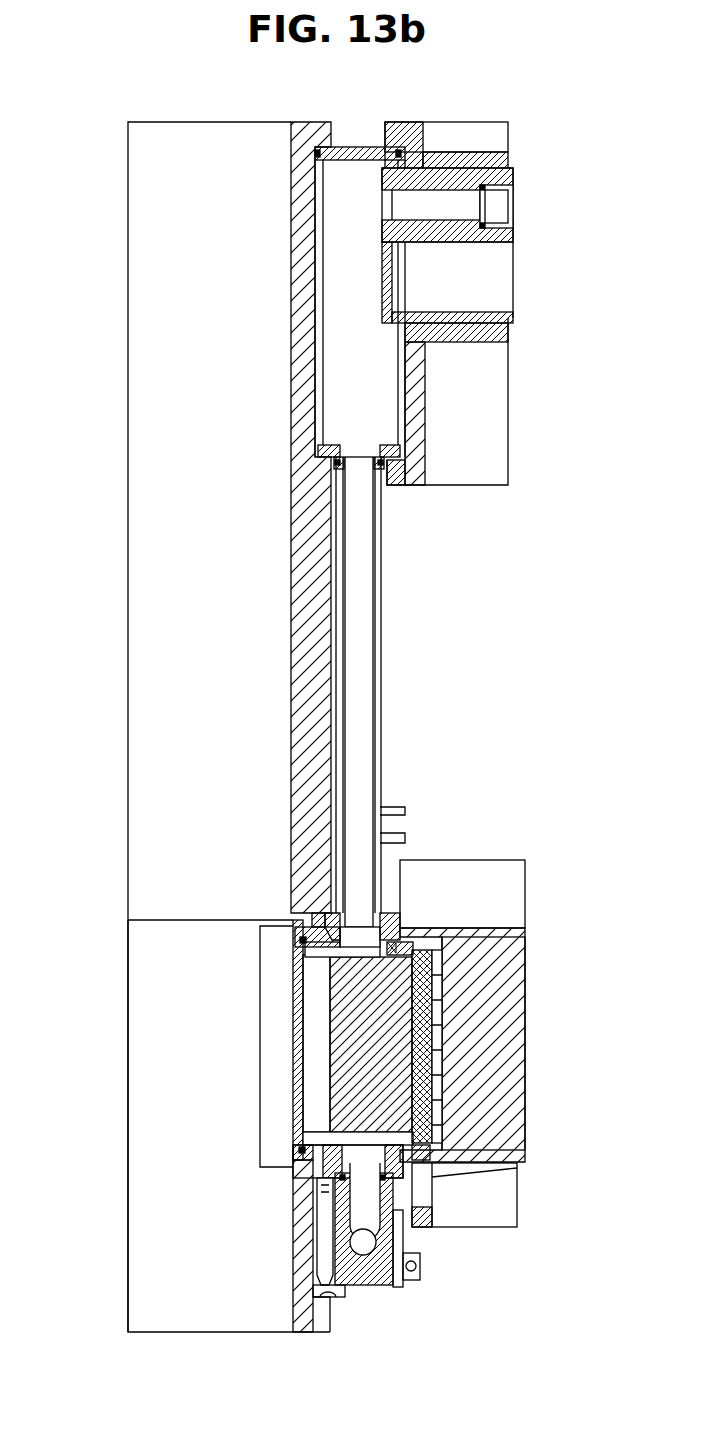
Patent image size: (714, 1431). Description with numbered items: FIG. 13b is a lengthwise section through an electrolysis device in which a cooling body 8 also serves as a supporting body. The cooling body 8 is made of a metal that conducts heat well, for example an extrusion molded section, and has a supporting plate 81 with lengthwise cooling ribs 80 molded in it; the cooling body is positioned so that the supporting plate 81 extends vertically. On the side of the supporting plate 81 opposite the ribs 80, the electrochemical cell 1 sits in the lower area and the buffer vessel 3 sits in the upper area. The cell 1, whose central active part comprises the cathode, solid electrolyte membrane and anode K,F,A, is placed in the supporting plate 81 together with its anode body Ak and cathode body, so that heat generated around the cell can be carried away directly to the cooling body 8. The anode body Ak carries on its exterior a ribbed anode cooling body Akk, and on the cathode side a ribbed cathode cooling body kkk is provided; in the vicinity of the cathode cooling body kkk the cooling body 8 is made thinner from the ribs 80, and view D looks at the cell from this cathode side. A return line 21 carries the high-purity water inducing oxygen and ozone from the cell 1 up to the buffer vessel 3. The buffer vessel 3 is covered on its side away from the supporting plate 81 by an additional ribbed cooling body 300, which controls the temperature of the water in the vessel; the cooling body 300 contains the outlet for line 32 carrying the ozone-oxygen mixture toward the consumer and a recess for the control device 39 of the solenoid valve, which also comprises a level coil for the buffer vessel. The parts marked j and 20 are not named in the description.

The cooling body 8 is at (118, 637).
The cooling ribs 80 is at (172, 1193).
The cathode cooling body kkk is at (277, 1157).
The cathode, solid electrolyte membrane and anode K,F,A is at (300, 1036).
The view D is at (250, 1063).
The buffer vessel 3 is at (347, 412).
The supporting plate 81 is at (317, 617).
The return line 21 is at (355, 694).
The cooling body 300 is at (427, 415).
The control device 39 is at (505, 277).
The line 32 is at (505, 203).
The electrochemical cell 1 is at (531, 948).
The block body j is at (505, 1040).
The anode body Ak is at (395, 1078).
The anode cooling body Akk is at (430, 1128).
The lower fitting 20 is at (360, 1247).